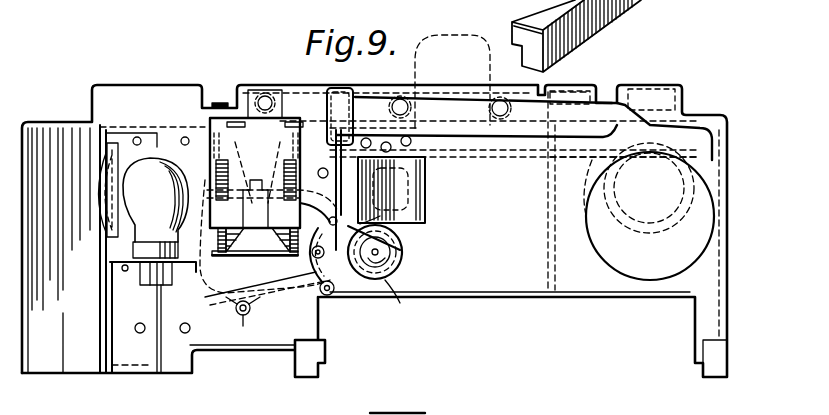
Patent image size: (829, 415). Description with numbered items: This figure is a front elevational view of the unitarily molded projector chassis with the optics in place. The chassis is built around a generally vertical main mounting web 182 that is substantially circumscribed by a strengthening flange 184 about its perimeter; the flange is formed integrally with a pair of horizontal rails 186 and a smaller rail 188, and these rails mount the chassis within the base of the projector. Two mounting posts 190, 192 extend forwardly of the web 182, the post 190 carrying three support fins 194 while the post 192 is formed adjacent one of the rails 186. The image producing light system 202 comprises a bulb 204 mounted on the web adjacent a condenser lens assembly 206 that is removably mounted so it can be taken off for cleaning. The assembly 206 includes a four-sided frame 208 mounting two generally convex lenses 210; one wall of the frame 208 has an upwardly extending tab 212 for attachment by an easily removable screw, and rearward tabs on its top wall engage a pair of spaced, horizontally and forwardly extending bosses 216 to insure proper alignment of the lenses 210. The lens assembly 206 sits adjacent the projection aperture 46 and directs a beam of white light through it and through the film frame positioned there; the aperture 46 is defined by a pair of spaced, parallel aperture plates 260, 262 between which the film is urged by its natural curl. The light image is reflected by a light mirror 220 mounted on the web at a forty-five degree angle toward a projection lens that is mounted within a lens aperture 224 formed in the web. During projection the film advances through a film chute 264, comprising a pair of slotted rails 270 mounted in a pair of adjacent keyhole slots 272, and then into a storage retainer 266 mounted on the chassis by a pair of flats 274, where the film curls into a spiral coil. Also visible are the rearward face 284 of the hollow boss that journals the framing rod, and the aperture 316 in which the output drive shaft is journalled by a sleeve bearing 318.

The projection aperture 46 is at (397, 253).
The main mounting web 182 is at (592, 282).
The strengthening flange 184 is at (722, 233).
The horizontal rails 186 is at (303, 364).
The smaller rail 188 is at (53, 362).
The mounting post 190 is at (238, 316).
The mounting post 192 is at (333, 294).
The support fins 194 is at (232, 305).
The image producing light system 202 is at (313, 188).
The bulb 204 is at (157, 172).
The condenser lens assembly 206 is at (215, 93).
The four-sided frame 208 is at (230, 118).
The convex lenses 210 is at (280, 150).
The upwardly extending tab 212 is at (275, 120).
The bosses 216 is at (296, 125).
The light mirror 220 is at (418, 207).
The lens aperture 224 is at (400, 177).
The aperture plate 260 is at (313, 259).
The aperture plate 262 is at (382, 220).
The film chute 264 is at (437, 106).
The storage retainer 266 is at (673, 153).
The slotted rails 270 is at (417, 120).
The keyhole slots 272 is at (428, 42).
The flats 274 is at (687, 115).
The rearward face 284 is at (260, 282).
The aperture 316 is at (388, 263).
The sleeve bearing 318 is at (400, 303).